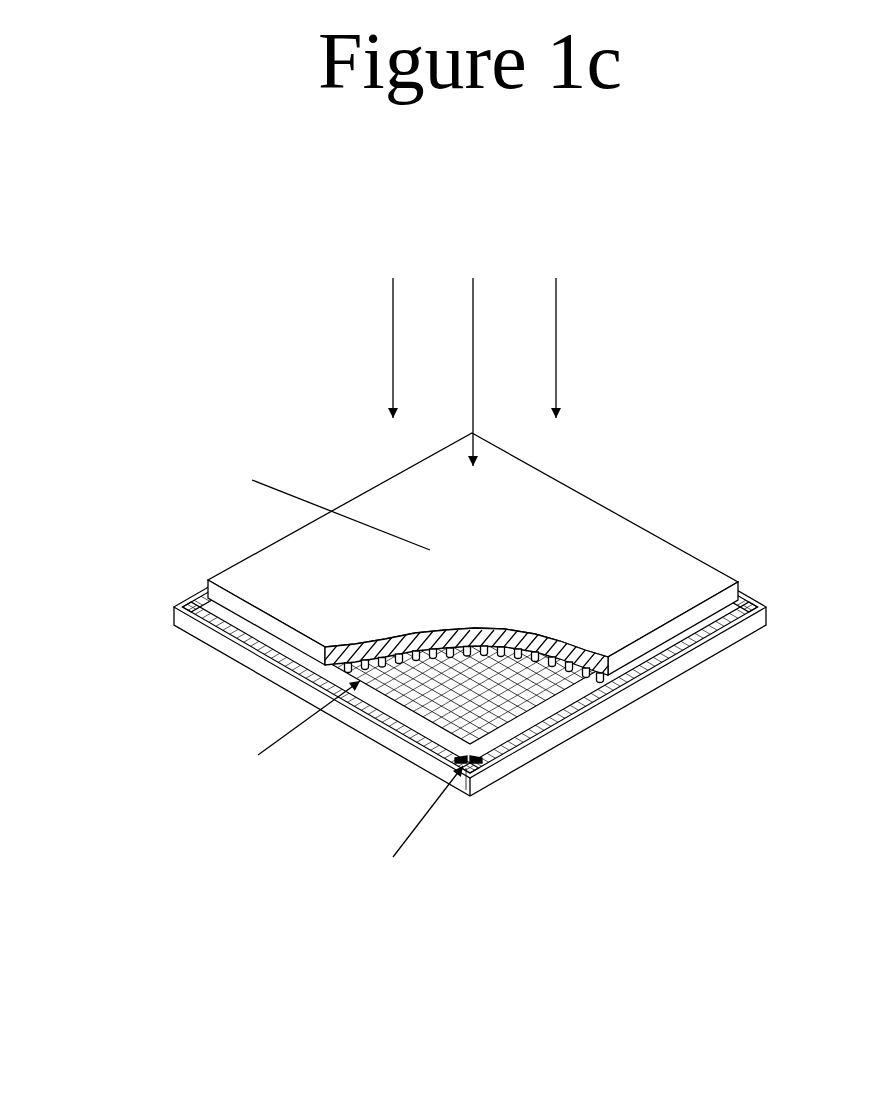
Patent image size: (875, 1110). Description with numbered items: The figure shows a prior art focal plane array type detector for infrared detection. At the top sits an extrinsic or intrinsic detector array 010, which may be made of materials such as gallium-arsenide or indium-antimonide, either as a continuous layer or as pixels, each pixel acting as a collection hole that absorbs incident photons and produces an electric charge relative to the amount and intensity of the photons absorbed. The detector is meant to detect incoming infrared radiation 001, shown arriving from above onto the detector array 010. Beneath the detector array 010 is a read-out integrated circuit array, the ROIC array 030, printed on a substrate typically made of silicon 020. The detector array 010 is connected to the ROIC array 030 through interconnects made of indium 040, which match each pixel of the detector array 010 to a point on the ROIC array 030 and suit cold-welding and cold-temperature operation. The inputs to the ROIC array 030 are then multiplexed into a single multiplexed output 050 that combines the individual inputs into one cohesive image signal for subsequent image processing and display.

The incoming infrared radiation 001 is at (395, 297).
The extrinsic or intrinsic detector array 010 is at (297, 549).
The silicon substrate 020 is at (628, 698).
The ROIC array 030 is at (528, 703).
The indium interconnects 040 is at (405, 677).
The multiplexed output 050 is at (468, 768).